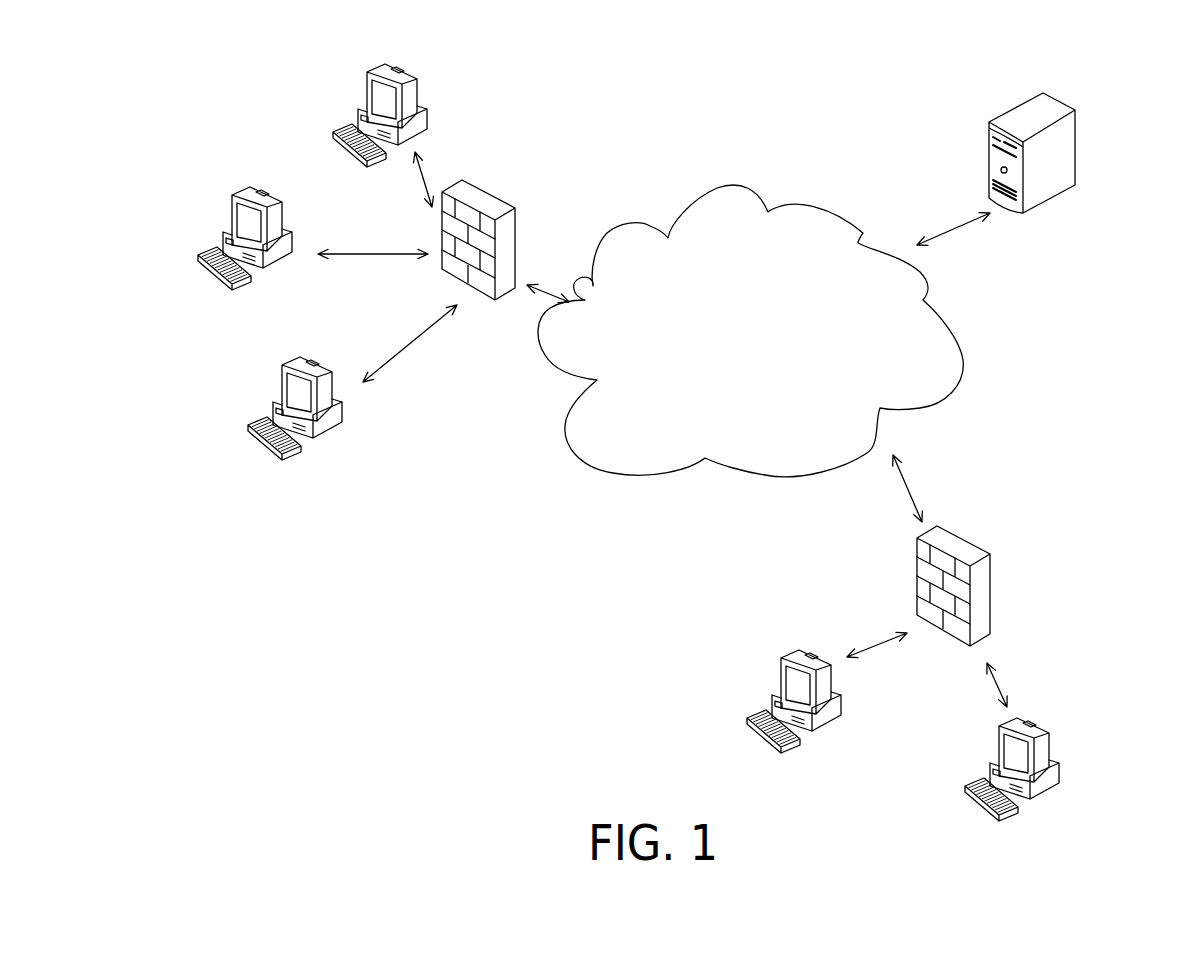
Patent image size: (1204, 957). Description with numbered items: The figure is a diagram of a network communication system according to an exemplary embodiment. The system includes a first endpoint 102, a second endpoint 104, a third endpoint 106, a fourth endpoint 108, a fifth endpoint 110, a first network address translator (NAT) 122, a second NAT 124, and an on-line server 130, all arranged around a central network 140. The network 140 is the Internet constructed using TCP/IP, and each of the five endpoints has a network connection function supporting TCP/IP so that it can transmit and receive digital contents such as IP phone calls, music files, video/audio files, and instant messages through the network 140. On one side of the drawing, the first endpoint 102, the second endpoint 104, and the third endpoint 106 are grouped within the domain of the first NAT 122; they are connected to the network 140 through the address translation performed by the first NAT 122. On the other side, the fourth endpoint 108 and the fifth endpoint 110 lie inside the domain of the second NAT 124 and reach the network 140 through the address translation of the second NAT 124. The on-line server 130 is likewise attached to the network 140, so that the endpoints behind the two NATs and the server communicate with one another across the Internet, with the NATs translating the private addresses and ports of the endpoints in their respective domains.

The first endpoint 102 is at (406, 77).
The second endpoint 104 is at (240, 196).
The third endpoint 106 is at (283, 373).
The fourth endpoint 108 is at (820, 728).
The fifth endpoint 110 is at (1055, 786).
The first network address translator (NAT) 122 is at (484, 195).
The second NAT 124 is at (965, 540).
The on-line server 130 is at (1063, 100).
The network 140 is at (781, 208).